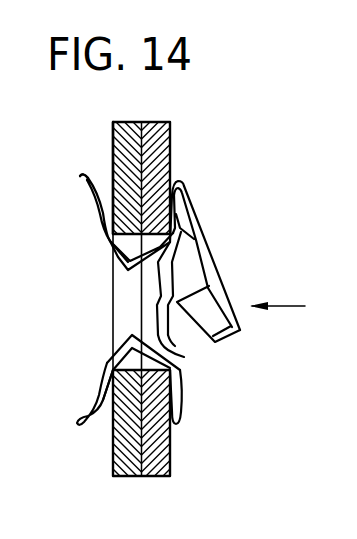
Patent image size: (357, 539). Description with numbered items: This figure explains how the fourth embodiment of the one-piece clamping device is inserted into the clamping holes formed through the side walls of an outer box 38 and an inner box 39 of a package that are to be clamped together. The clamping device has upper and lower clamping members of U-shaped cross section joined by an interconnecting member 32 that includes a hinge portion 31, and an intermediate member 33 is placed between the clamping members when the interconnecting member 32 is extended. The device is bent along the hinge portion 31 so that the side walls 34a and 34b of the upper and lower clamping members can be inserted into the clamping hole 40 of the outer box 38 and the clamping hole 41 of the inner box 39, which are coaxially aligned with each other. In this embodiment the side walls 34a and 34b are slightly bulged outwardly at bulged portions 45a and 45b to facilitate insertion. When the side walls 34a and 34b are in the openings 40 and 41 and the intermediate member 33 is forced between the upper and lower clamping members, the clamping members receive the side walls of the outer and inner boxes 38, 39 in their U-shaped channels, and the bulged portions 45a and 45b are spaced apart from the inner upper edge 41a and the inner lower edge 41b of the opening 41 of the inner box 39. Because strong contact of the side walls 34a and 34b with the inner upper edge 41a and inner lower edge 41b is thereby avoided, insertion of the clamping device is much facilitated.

The hinge portion 31 is at (216, 288).
The interconnecting member 32 is at (170, 340).
The intermediate member 33 is at (190, 253).
The side wall of upper clamping member 34a is at (100, 204).
The side wall of lower clamping member 34b is at (82, 410).
The outer box 38 is at (155, 138).
The inner box 39 is at (113, 146).
The clamping hole 40 is at (150, 317).
The clamping hole 41 is at (118, 288).
The inner upper edge 41a is at (110, 252).
The inner lower edge 41b is at (102, 385).
The bulged portion 45a is at (112, 238).
The bulged portion 45b is at (113, 363).